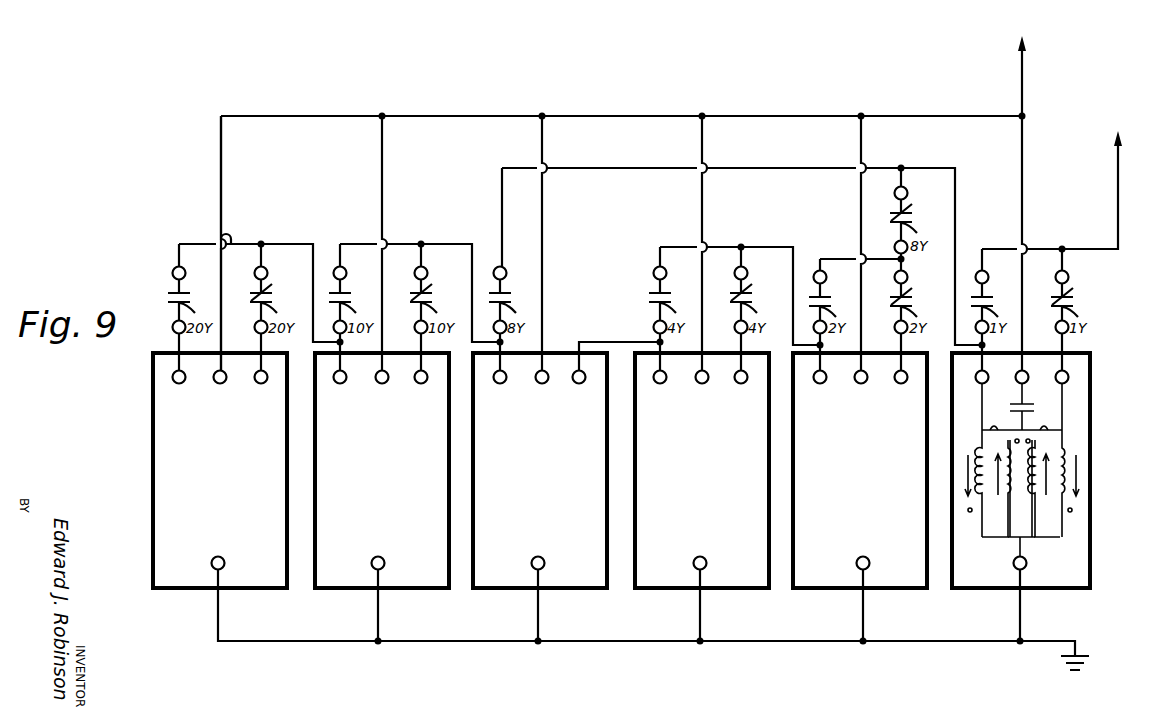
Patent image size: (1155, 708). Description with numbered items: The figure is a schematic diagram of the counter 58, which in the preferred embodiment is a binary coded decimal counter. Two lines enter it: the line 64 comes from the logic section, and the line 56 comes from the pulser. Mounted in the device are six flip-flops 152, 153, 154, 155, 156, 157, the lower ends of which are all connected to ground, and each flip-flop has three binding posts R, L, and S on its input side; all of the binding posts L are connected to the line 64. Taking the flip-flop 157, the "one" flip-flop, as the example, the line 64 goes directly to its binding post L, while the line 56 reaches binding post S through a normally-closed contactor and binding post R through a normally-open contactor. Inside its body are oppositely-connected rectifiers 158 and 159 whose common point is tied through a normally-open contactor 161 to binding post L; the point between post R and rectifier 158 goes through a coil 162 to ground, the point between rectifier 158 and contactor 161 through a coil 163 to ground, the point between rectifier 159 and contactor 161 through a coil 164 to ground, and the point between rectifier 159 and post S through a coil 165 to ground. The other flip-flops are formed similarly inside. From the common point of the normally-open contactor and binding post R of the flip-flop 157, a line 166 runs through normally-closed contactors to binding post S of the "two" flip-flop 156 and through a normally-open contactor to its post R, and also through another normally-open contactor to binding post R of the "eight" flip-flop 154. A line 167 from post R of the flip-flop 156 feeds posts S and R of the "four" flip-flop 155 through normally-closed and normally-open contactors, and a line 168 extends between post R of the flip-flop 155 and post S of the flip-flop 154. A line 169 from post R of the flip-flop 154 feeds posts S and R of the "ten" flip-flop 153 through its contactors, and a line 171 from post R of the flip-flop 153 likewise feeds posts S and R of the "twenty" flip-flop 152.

The line 56 is at (1117, 190).
The counter 58 is at (488, 116).
The line 64 is at (1020, 87).
The flip-flop 152 is at (178, 592).
The flip-flop 153 is at (349, 592).
The flip-flop 154 is at (507, 592).
The flip-flop 155 is at (670, 592).
The flip-flop 156 is at (832, 592).
The flip-flop 157 is at (977, 592).
The rectifier 158 is at (998, 429).
The rectifier 159 is at (1044, 430).
The normally-open contactor 161 is at (1026, 406).
The coil 162 is at (981, 450).
The coil 163 is at (1006, 501).
The coil 164 is at (1039, 501).
The coil 165 is at (1065, 443).
The line 166 is at (957, 205).
The line 167 is at (774, 245).
The line 168 is at (603, 342).
The line 169 is at (446, 242).
The line 171 is at (283, 242).